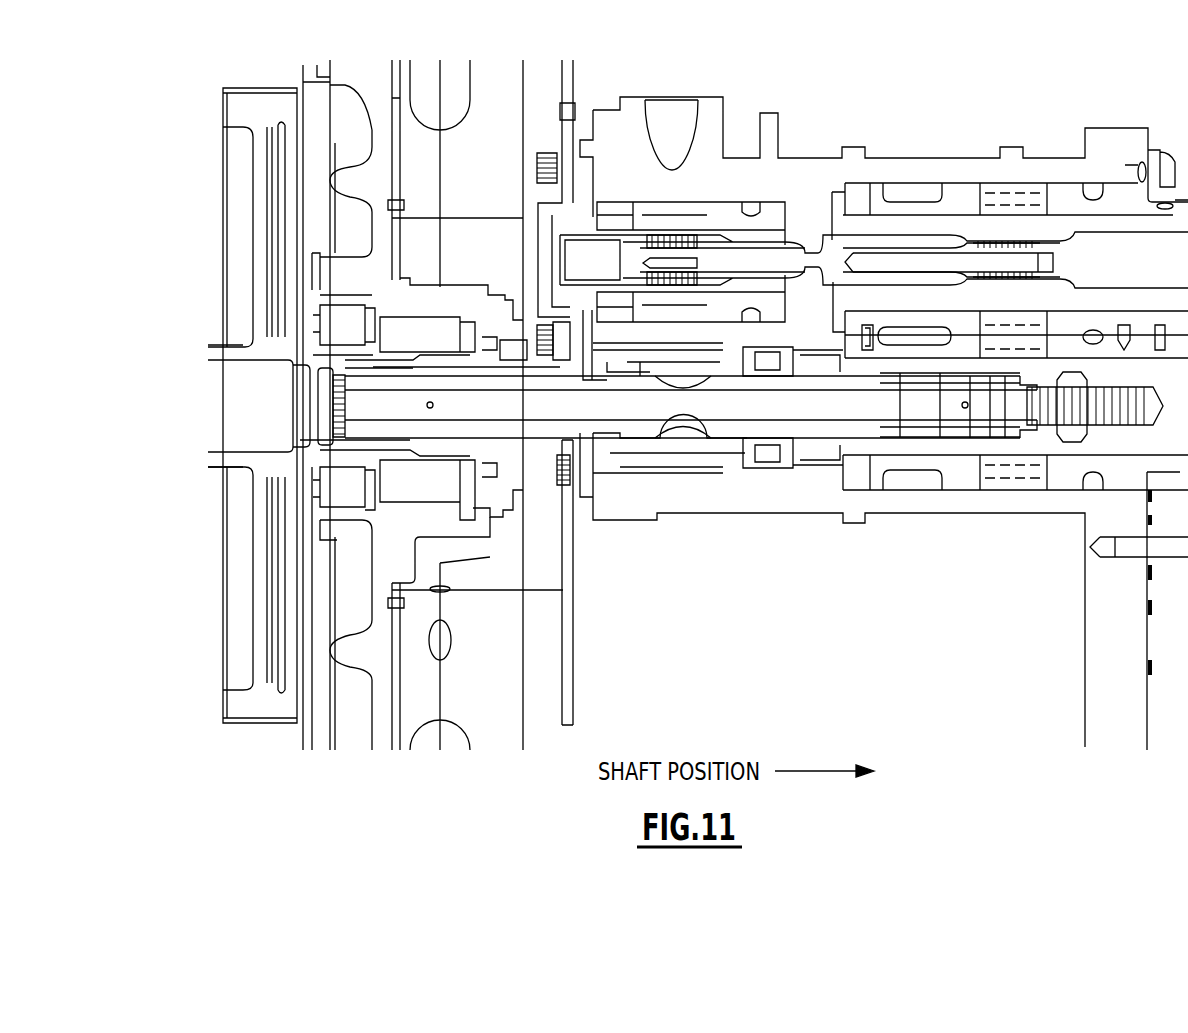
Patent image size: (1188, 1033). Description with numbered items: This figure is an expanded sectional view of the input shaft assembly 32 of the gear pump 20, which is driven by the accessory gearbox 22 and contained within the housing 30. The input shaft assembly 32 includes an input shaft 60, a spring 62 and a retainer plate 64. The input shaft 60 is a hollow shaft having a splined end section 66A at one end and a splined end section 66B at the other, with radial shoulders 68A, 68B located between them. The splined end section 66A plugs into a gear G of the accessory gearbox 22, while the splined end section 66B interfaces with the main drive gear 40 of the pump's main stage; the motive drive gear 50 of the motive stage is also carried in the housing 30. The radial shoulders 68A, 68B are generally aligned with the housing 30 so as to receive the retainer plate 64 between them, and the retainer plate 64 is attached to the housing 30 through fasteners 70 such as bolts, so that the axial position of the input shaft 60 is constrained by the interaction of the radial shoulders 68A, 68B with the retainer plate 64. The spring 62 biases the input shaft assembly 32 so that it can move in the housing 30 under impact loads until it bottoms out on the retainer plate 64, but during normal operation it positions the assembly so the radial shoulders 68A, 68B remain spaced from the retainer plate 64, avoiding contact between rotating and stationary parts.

The gear pump 20 is at (1098, 96).
The accessory gearbox 22 is at (212, 143).
The gear G is at (253, 297).
The housing 30 is at (800, 160).
The motive drive gear 50 is at (688, 222).
The radial shoulder 68A is at (582, 363).
The radial shoulder 68B is at (615, 367).
The main drive gear 40 is at (1008, 350).
The splined end section 66B is at (1010, 385).
The splined end section 66A is at (370, 437).
The input shaft assembly 32 is at (322, 451).
The fasteners 70 is at (550, 483).
The retainer plate 64 is at (585, 500).
The input shaft 60 is at (680, 428).
The spring 62 is at (1073, 435).